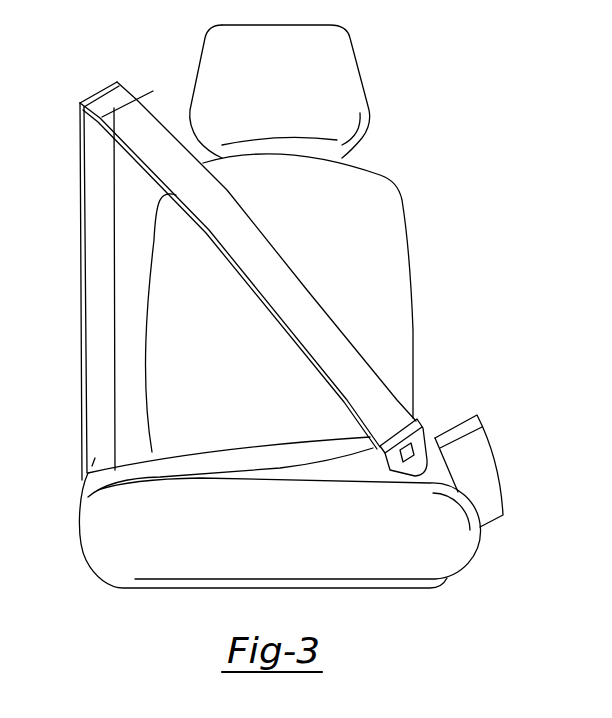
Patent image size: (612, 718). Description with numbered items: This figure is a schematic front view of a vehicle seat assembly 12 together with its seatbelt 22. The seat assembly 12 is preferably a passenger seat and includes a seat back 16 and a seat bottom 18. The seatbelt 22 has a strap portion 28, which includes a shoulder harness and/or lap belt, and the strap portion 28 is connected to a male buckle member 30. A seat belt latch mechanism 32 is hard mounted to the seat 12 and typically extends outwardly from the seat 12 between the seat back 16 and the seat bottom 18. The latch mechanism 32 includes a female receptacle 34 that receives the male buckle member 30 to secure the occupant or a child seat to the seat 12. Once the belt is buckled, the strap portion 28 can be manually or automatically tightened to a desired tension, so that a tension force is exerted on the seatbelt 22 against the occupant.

The vehicle seat assembly 12 is at (388, 88).
The seat back 16 is at (285, 98).
The seat bottom 18 is at (423, 567).
The seatbelt 22 is at (70, 277).
The strap portion 28 is at (153, 127).
The male buckle member 30 is at (413, 470).
The seat belt latch mechanism 32 is at (506, 500).
The female receptacle 34 is at (447, 430).